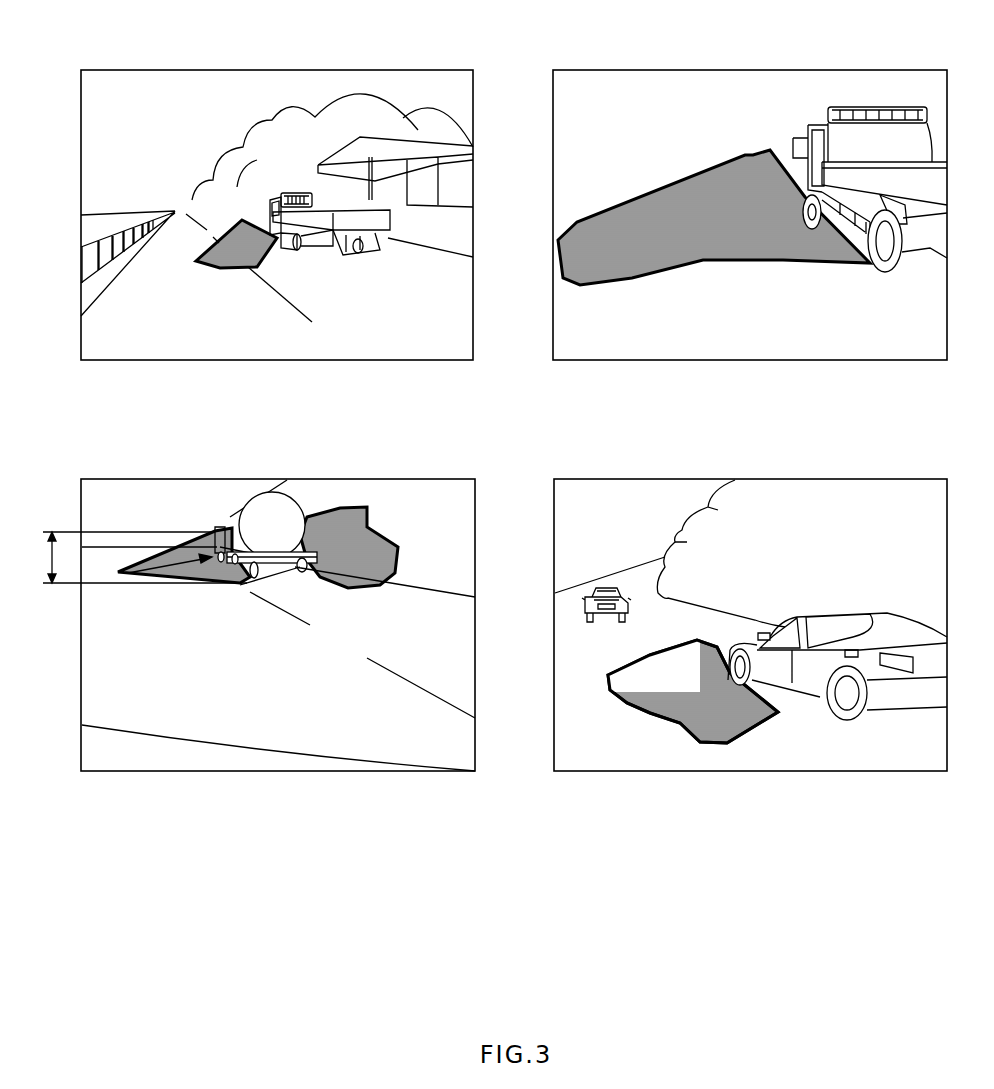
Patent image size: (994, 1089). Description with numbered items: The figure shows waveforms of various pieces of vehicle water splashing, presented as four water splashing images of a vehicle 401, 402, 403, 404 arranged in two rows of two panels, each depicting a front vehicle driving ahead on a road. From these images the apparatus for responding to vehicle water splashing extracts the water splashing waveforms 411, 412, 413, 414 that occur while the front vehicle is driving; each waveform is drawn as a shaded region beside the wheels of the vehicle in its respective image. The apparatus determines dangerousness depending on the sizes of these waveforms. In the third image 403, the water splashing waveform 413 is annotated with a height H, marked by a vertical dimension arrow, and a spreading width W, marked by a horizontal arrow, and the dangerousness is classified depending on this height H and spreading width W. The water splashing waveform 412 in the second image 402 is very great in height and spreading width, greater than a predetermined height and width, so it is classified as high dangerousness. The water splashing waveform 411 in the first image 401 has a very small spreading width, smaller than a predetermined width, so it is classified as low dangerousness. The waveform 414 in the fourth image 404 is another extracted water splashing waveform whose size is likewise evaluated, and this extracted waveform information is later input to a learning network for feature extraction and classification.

The water splashing image 401 is at (392, 69).
The water splashing image 402 is at (745, 69).
The water splashing image 403 is at (277, 478).
The water splashing image 404 is at (747, 478).
The water splashing waveform 411 is at (228, 227).
The water splashing waveform 412 is at (657, 190).
The water splashing waveform 413 is at (348, 507).
The water splashing waveform 414 is at (650, 717).
The spreading width W is at (168, 563).
The height H is at (137, 557).